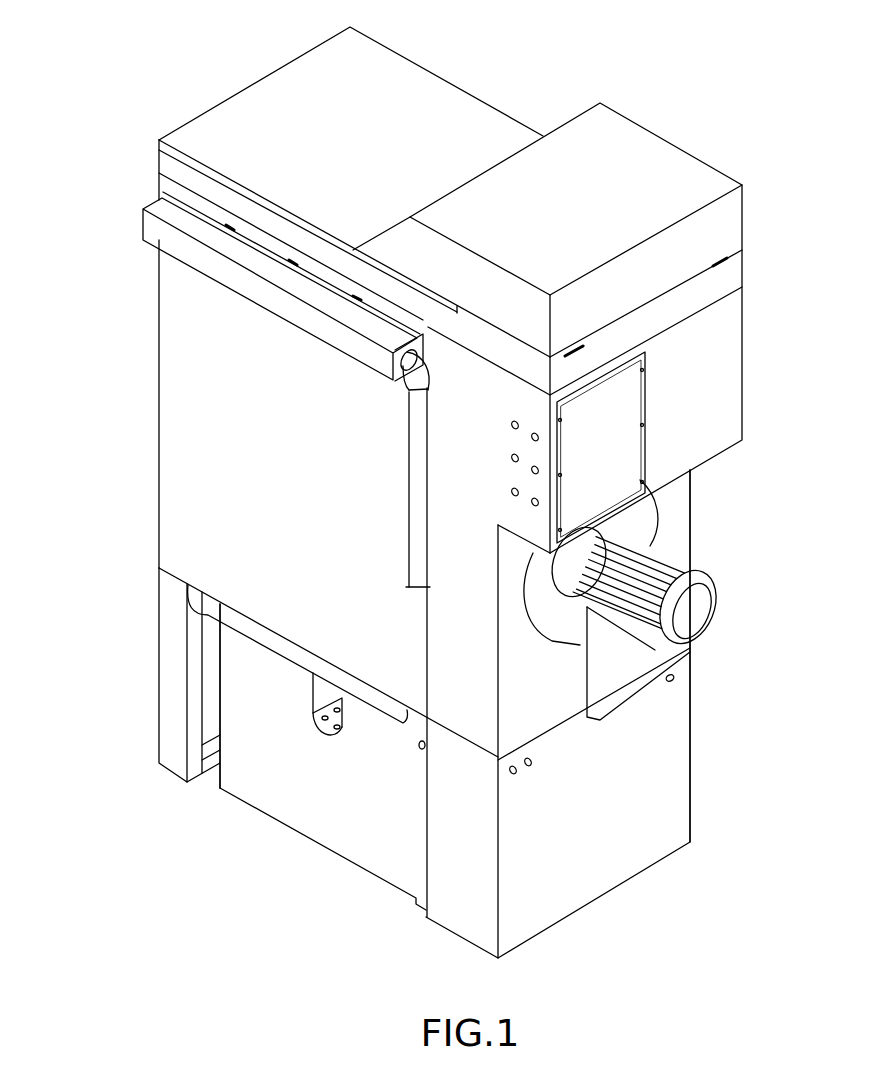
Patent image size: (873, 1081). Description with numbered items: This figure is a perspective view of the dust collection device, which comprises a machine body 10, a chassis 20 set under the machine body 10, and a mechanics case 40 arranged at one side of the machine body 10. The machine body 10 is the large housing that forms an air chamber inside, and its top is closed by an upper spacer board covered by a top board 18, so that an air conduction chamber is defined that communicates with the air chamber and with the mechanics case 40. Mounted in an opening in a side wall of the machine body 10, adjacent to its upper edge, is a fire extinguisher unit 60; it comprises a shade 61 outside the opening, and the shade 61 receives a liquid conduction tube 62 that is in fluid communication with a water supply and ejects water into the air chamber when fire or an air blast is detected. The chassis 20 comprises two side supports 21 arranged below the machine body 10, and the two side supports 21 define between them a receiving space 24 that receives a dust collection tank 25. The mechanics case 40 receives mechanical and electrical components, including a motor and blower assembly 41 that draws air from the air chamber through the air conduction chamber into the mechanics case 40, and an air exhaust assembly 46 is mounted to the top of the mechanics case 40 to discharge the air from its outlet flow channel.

The machine body 10 is at (158, 353).
The top board 18 is at (408, 72).
The chassis 20 is at (141, 646).
The side support 21 is at (158, 596).
The receiving space 24 is at (208, 708).
The dust collection tank 25 is at (323, 817).
The mechanics case 40 is at (735, 375).
The motor and blower assembly 41 is at (680, 558).
The air exhaust assembly 46 is at (652, 148).
The fire extinguisher unit 60 is at (138, 194).
The shade 61 is at (157, 245).
The liquid conduction tube 62 is at (400, 386).